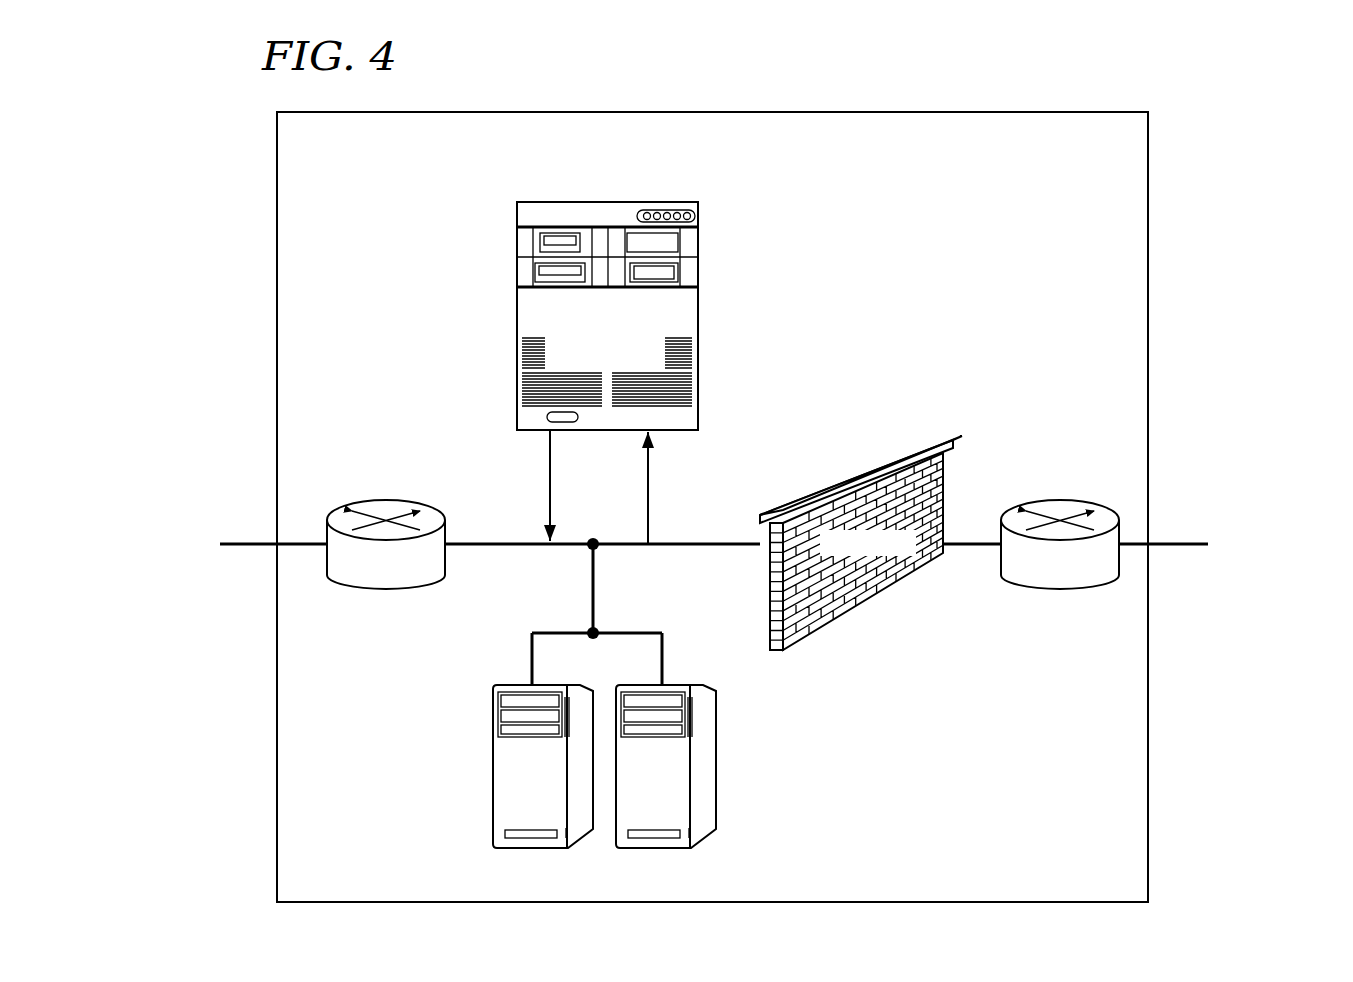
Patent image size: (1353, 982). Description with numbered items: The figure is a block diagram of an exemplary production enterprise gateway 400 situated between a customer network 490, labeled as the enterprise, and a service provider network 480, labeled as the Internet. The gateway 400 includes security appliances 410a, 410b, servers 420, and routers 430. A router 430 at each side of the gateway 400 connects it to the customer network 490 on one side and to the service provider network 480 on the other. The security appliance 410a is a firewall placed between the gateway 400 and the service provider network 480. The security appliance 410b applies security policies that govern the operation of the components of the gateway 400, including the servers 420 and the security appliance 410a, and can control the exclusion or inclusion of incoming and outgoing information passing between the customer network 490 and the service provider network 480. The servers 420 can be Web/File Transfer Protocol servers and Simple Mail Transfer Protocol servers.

The production enterprise gateway 400 is at (910, 86).
The security appliance 410a is at (932, 420).
The security appliance 410b is at (485, 286).
The servers 420 is at (494, 774).
The routers 430 is at (380, 587).
The service provider network 480 is at (1265, 523).
The customer network 490 is at (140, 521).